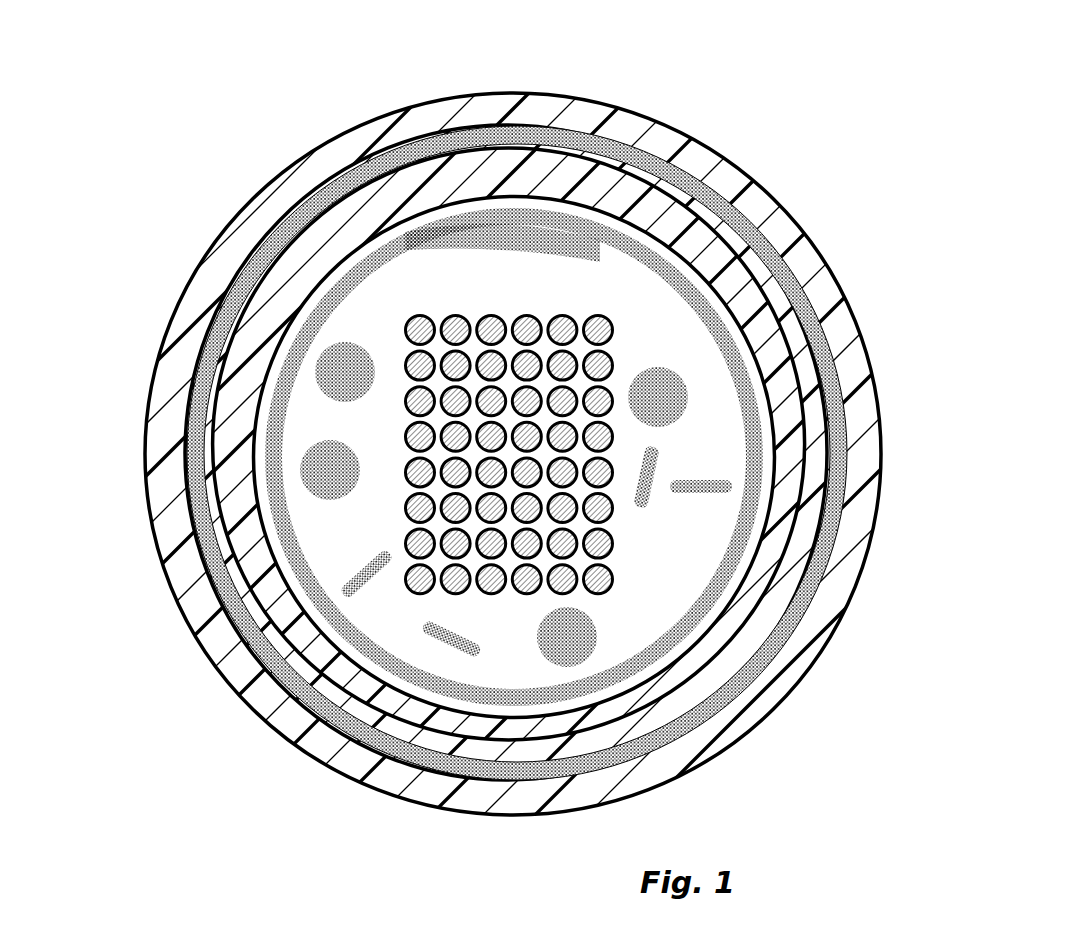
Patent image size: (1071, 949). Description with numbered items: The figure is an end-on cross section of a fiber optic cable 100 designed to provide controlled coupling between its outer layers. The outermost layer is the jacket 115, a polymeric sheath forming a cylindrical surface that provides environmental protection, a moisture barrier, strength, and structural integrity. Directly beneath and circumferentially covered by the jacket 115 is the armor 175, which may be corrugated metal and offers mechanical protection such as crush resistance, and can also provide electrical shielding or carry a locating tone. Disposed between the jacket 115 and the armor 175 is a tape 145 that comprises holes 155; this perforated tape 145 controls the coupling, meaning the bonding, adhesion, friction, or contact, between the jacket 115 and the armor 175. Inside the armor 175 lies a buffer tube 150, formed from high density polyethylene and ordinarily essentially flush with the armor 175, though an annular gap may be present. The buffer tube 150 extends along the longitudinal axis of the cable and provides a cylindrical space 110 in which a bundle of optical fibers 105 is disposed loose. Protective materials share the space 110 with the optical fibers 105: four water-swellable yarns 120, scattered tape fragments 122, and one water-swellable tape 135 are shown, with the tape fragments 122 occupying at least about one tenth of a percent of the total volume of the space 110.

The fiber optic cable 100 is at (123, 198).
The optical fibers 105 is at (585, 297).
The space 110 is at (526, 289).
The jacket 115 is at (835, 618).
The water-swellable yarns 120 is at (345, 355).
The tape fragments 122 is at (672, 487).
The water-swellable tape 135 is at (750, 708).
The tape 145 is at (280, 737).
The buffer tube 150 is at (480, 188).
The holes 155 is at (370, 162).
The armor 175 is at (490, 157).